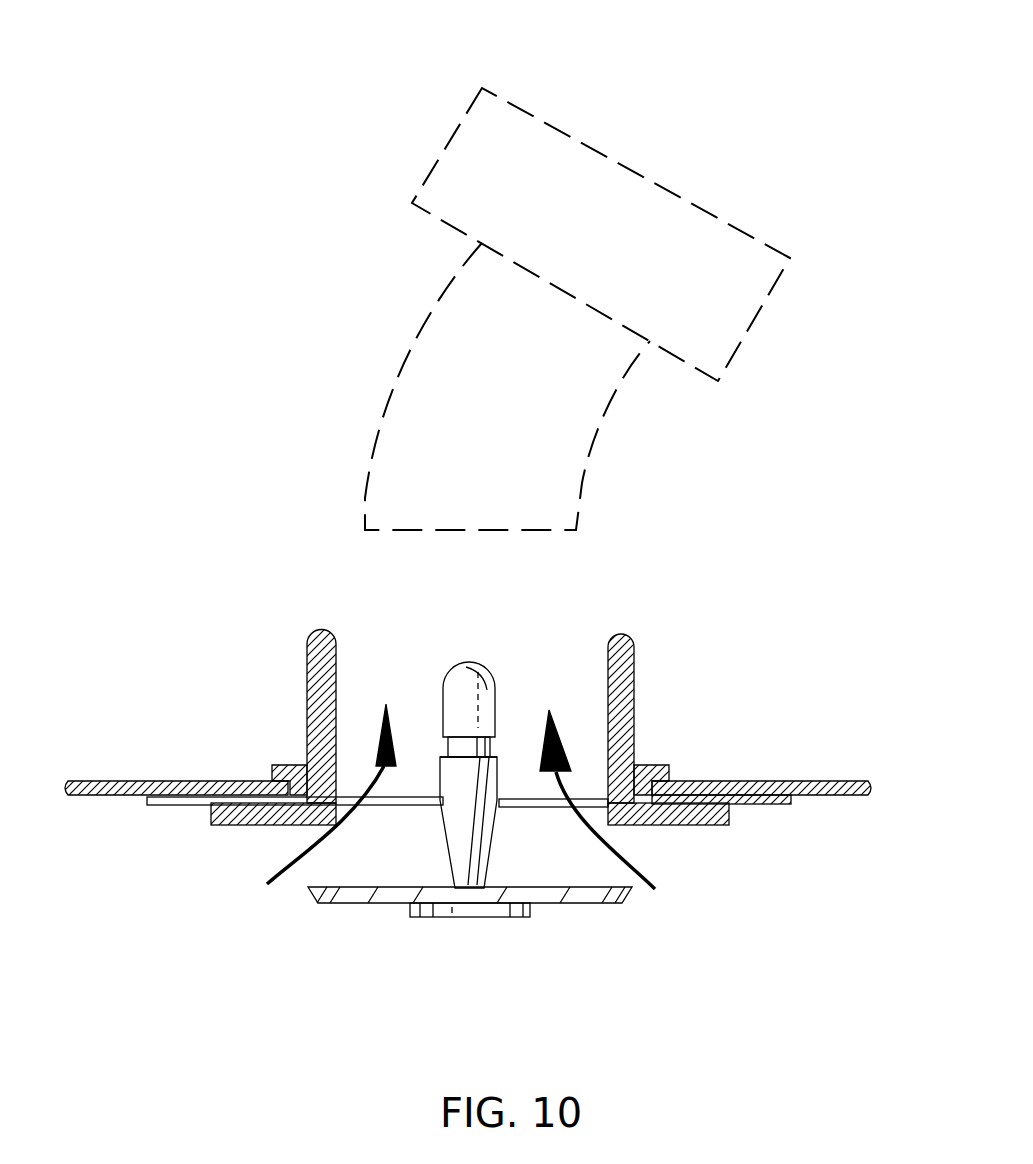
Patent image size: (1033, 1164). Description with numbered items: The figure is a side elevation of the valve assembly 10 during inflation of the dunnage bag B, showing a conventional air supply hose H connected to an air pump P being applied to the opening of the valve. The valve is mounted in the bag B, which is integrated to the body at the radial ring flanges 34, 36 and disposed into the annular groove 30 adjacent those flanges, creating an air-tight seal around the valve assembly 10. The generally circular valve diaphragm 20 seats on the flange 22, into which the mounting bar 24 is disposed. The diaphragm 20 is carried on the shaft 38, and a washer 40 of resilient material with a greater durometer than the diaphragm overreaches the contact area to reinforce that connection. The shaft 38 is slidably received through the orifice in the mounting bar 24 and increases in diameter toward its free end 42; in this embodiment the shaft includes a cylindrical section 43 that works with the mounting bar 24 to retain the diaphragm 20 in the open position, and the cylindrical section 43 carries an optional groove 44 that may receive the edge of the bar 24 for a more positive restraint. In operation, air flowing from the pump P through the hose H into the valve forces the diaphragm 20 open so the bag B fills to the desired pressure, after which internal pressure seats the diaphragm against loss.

The valve assembly 10 is at (667, 636).
The valve diaphragm 20 is at (597, 907).
The flange 22 is at (731, 817).
The mounting bar 24 is at (539, 815).
The annular groove 30 is at (273, 778).
The radial ring flange 34 is at (171, 805).
The radial ring flange 36 is at (288, 765).
The shaft 38 is at (453, 845).
The washer 40 is at (420, 917).
The free end 42 is at (478, 662).
The cylindrical section 43 is at (440, 753).
The groove 44 is at (463, 750).
The bag B is at (757, 782).
The air supply hose H is at (410, 353).
The air pump P is at (620, 164).